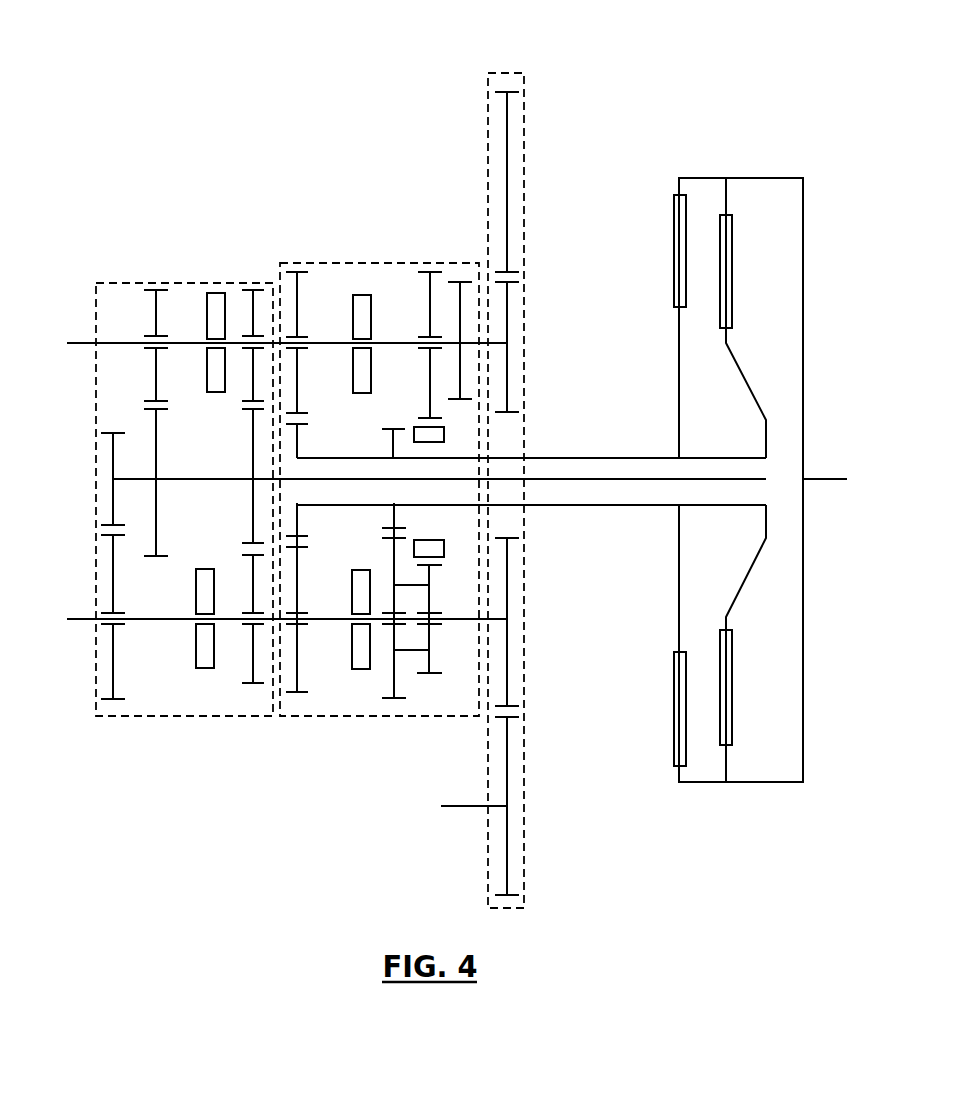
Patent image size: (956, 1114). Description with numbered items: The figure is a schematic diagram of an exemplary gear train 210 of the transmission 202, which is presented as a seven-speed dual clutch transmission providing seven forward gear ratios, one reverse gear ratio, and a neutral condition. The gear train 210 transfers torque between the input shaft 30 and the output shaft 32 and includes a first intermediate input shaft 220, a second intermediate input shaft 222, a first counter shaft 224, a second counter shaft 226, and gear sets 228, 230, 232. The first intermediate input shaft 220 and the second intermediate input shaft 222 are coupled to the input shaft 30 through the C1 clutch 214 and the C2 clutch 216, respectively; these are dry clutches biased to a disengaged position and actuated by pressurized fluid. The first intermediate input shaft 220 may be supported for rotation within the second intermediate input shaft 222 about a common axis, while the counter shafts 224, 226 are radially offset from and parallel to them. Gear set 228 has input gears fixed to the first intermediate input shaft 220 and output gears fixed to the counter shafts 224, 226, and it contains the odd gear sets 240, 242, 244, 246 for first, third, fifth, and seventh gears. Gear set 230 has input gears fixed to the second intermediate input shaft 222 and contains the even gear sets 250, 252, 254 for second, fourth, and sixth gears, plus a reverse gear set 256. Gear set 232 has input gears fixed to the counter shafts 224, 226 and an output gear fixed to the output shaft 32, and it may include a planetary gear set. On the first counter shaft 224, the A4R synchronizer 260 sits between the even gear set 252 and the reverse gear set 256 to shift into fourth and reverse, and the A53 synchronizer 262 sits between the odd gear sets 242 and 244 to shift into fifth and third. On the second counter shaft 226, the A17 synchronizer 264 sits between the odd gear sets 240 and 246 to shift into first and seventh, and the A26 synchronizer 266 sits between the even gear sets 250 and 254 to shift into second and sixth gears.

The transmission 202 is at (100, 52).
The gear train 210 is at (265, 189).
The gear set 228 is at (172, 283).
The gear set 230 is at (384, 263).
The gear set 232 is at (488, 175).
The first counter shaft 224 is at (75, 343).
The second counter shaft 226 is at (75, 619).
The first intermediate input shaft 220 is at (583, 479).
The second intermediate input shaft 222 is at (652, 458).
The first (C1) clutch 214 is at (732, 282).
The second (C2) clutch 216 is at (674, 252).
The odd gear set 240 is at (113, 576).
The odd gear set 242 is at (156, 300).
The odd gear set 244 is at (253, 300).
The odd gear set 246 is at (253, 580).
The even gear set 250 is at (394, 565).
The even gear set 252 is at (297, 303).
The even gear set 254 is at (290, 658).
The reverse gear set 256 is at (430, 305).
The first (A4R) synchronizer 260 is at (362, 393).
The second (A53) synchronizer 262 is at (215, 392).
The third (A17) synchronizer 264 is at (205, 668).
The fourth (A26) synchronizer 266 is at (362, 669).
The input shaft 30 is at (830, 479).
The output shaft 32 is at (462, 806).